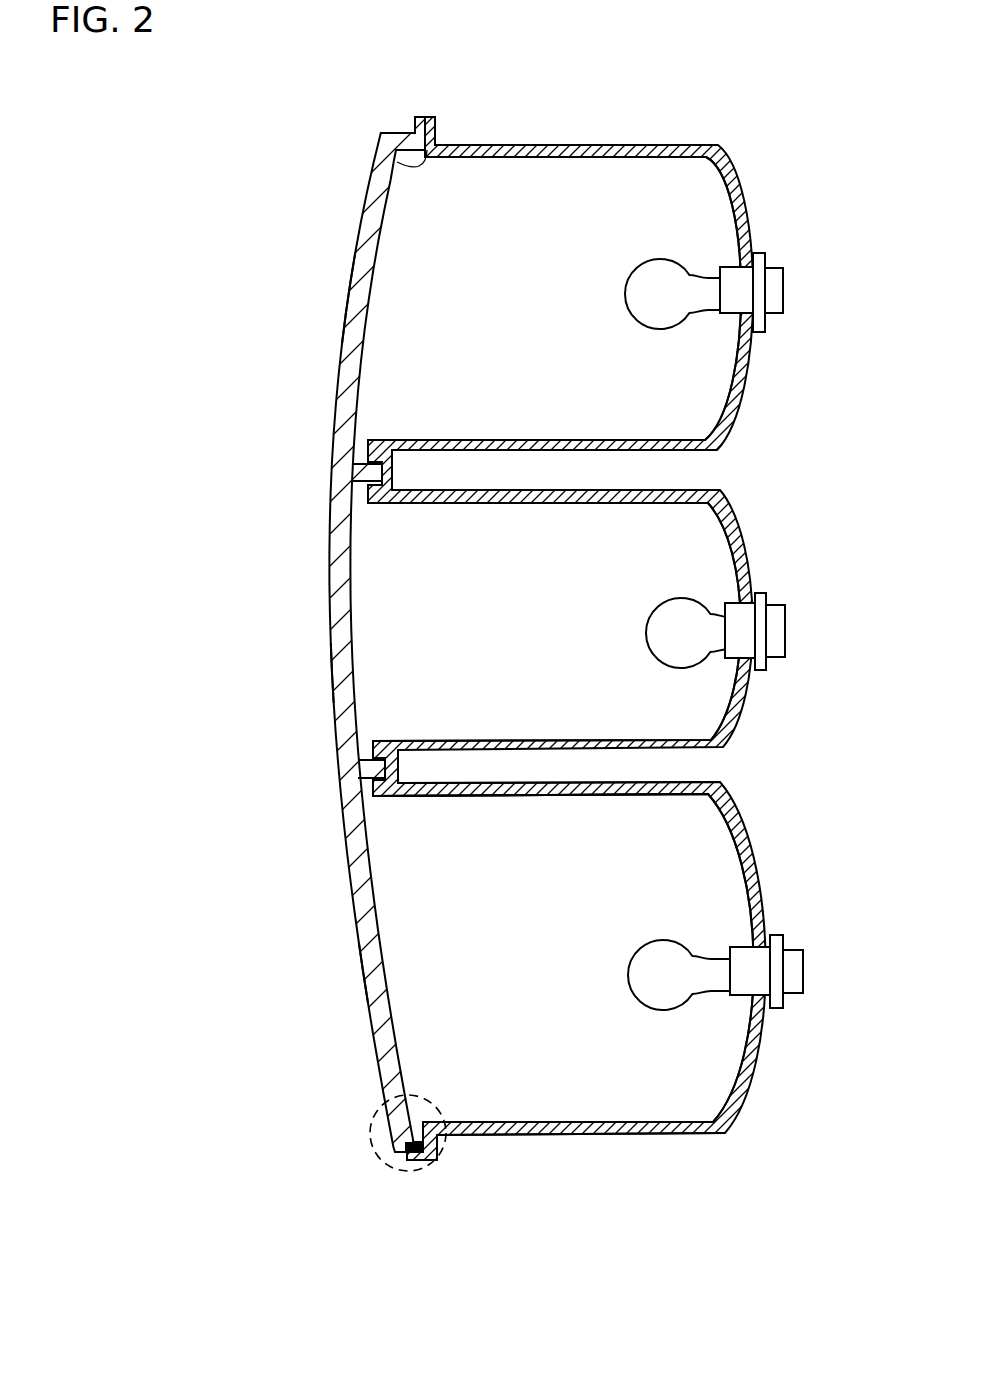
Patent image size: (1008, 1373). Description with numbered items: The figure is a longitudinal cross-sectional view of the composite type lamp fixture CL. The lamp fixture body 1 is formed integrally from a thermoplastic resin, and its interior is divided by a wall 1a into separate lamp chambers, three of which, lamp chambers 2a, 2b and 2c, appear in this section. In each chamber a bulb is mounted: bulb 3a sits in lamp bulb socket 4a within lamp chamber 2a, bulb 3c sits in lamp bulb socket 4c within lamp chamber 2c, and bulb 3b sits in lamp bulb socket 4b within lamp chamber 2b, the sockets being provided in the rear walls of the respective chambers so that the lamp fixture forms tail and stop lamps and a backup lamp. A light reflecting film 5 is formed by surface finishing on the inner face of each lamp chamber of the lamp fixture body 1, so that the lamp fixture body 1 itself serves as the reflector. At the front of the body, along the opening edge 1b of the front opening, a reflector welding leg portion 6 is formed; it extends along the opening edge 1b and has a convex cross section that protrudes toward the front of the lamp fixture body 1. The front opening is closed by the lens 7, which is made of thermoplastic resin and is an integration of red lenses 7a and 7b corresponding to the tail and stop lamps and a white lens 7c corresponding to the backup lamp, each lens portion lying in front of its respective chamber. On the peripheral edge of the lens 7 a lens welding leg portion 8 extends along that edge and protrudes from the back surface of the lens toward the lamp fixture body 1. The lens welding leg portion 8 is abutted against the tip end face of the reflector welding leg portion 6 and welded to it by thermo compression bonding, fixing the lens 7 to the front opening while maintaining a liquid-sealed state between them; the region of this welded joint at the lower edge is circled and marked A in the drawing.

The lamp fixture body 1 is at (732, 506).
The wall 1a is at (560, 442).
The opening edge 1b is at (396, 162).
The lamp chamber 2a is at (560, 226).
The lamp chamber 2b is at (573, 881).
The lamp chamber 2c is at (568, 569).
The bulb 3a is at (642, 293).
The bulb 3b is at (640, 975).
The bulb 3c is at (668, 630).
The lamp bulb socket 4a is at (780, 296).
The lamp bulb socket 4b is at (797, 973).
The lamp bulb socket 4c is at (776, 640).
The light reflecting film 5 is at (632, 1122).
The reflector welding leg portion 6 is at (424, 118).
The lens 7 is at (338, 345).
The red lens 7a is at (355, 310).
The red lens 7b is at (362, 985).
The white lens 7c is at (352, 650).
The lens welding leg portion 8 is at (418, 133).
The composite type lamp fixture CL is at (492, 140).
The detail region A is at (446, 1148).